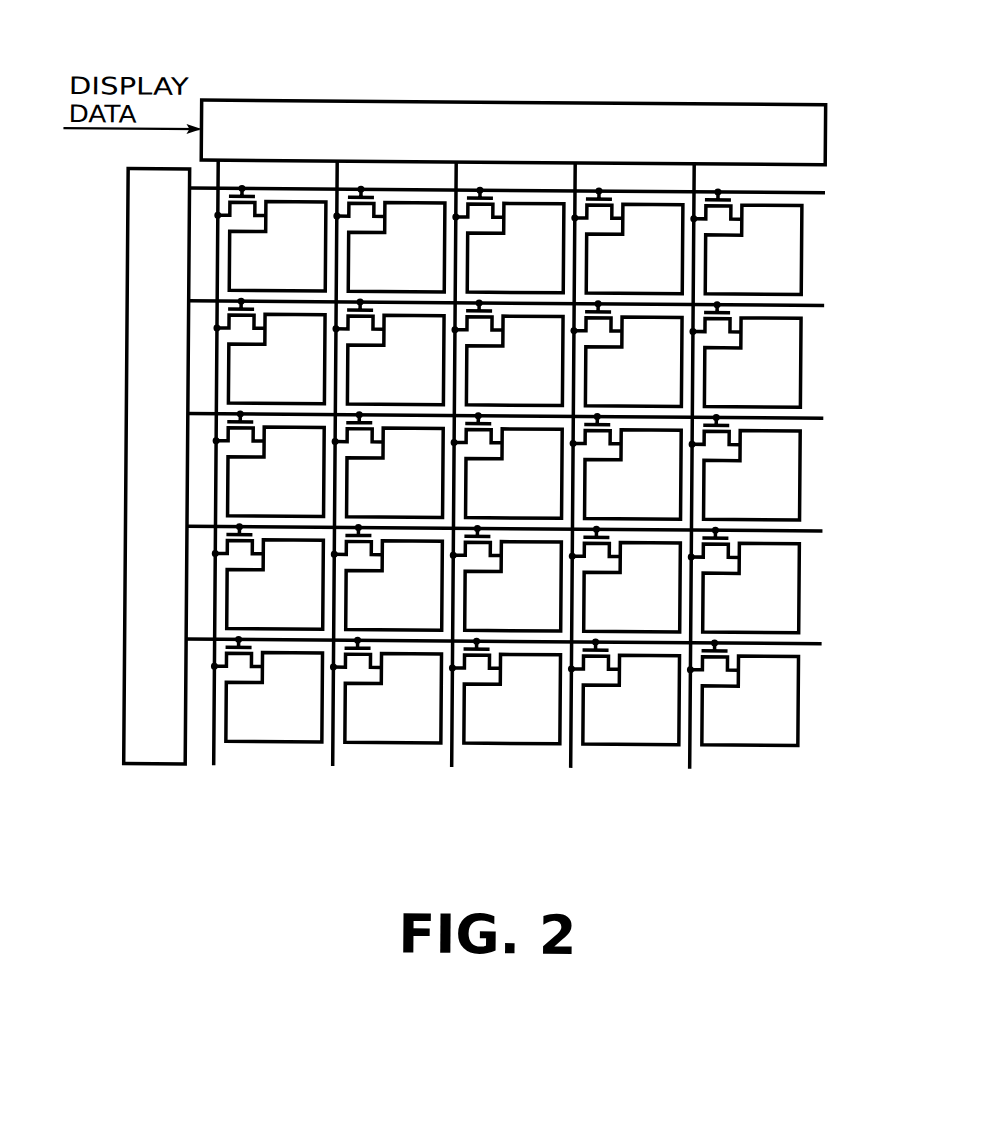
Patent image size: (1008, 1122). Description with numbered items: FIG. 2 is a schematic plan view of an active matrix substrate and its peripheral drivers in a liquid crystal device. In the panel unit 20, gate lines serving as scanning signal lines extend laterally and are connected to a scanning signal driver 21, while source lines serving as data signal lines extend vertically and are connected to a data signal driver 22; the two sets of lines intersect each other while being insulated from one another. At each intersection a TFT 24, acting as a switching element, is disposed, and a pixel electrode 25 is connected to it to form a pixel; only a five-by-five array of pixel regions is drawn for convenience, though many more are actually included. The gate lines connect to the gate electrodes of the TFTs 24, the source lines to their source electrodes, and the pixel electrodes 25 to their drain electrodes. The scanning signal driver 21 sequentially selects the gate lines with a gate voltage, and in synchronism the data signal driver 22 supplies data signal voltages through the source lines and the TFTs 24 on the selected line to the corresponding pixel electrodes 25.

The panel unit 20 is at (195, 815).
The scanning signal driver 21 is at (161, 766).
The data signal driver 22 is at (484, 99).
The TFT 24 is at (712, 208).
The pixel electrode 25 is at (780, 271).